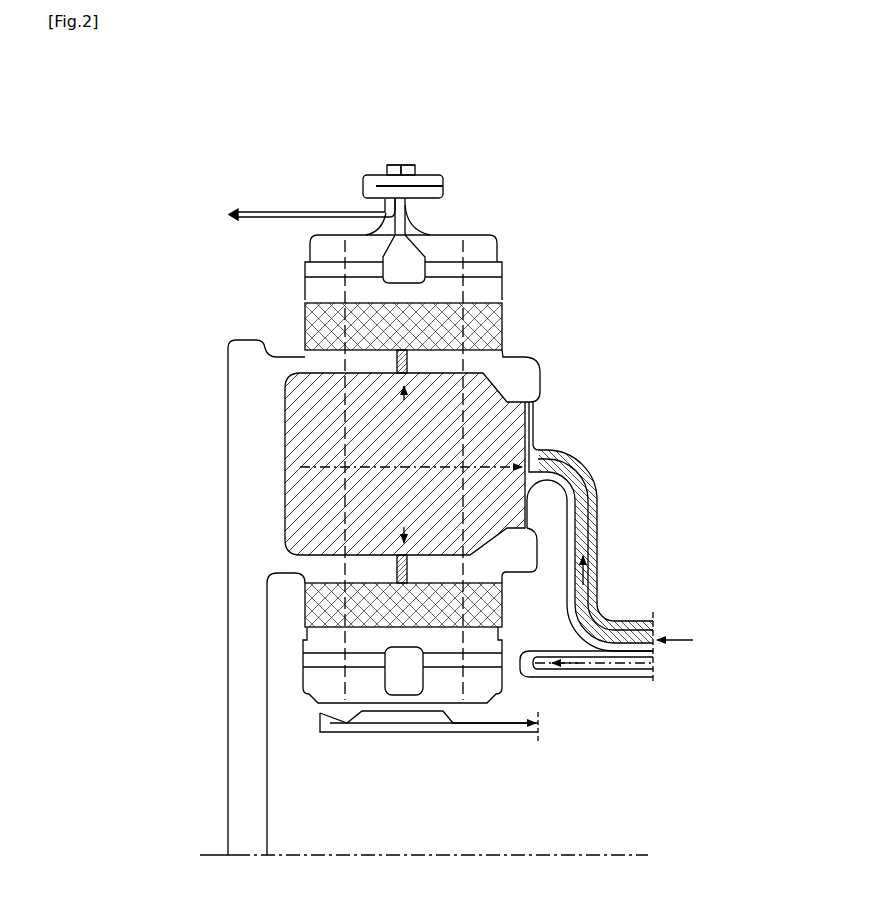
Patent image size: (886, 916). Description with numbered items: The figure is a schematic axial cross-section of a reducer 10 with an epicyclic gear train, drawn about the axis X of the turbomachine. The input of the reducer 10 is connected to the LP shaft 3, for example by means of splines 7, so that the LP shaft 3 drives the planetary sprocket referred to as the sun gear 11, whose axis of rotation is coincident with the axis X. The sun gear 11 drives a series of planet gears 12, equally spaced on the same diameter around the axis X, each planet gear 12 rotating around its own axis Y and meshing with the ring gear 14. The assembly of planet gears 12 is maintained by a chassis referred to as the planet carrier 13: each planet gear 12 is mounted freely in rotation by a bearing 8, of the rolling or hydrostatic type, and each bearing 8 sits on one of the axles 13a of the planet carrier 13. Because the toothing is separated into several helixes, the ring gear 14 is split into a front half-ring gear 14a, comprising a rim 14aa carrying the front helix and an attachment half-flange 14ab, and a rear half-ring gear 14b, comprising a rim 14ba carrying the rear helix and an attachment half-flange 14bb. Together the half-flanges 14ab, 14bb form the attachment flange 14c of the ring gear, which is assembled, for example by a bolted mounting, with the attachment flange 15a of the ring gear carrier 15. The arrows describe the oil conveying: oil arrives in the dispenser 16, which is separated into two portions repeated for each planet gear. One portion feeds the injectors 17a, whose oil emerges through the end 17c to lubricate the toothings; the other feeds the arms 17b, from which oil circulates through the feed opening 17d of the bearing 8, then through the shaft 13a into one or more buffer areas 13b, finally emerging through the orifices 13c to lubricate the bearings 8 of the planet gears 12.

The LP shaft 3 is at (508, 733).
The splines 7 is at (382, 713).
The bearing 8 is at (502, 326).
The reducer 10 is at (616, 309).
The sun gear 11 is at (310, 677).
The planet gear 12 is at (303, 652).
The planet carrier 13 is at (527, 362).
The axle 13a is at (530, 558).
The buffer area 13b is at (405, 464).
The orifice 13c is at (410, 358).
The ring gear 14 is at (500, 242).
The front half-ring gear 14a is at (318, 250).
The rear half-ring gear 14b is at (490, 255).
The rim 14aa is at (326, 243).
The rim 14ba is at (455, 243).
The attachment half-flange 14ab is at (394, 166).
The attachment half-flange 14bb is at (410, 167).
The attachment flange 14c is at (455, 120).
The ring gear carrier 15 is at (268, 212).
The attachment flange 15a is at (385, 170).
The dispenser 16 is at (650, 600).
The injector 17a is at (611, 672).
The arm 17b is at (597, 513).
The end 17c is at (520, 680).
The feed opening 17d is at (535, 410).
The axis X is at (602, 852).
The axis Y is at (537, 454).